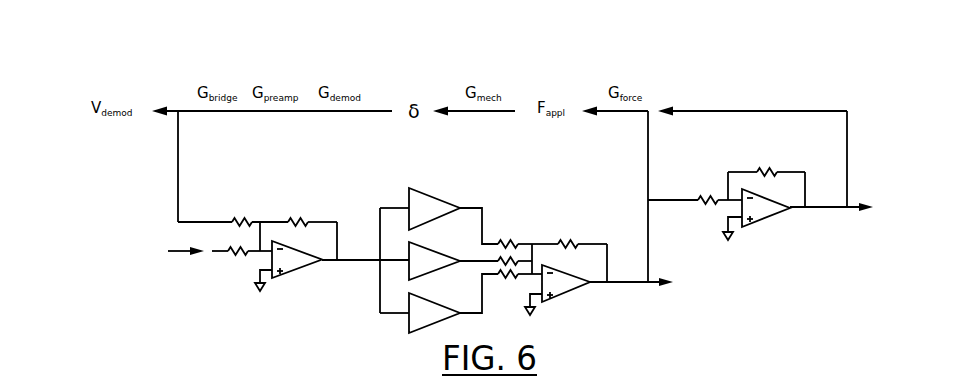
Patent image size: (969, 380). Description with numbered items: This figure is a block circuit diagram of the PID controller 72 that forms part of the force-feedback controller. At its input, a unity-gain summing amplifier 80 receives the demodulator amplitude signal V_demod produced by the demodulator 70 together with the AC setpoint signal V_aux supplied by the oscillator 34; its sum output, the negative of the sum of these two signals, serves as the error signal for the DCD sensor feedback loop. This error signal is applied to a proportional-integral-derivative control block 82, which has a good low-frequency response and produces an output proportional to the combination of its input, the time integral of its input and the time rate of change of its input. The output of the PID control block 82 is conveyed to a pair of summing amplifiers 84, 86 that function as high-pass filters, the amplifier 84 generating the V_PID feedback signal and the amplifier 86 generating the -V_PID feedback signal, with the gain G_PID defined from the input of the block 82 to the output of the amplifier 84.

The oscillator 34 is at (136, 302).
The demodulator 70 is at (97, 173).
The PID controller 72 is at (668, 60).
The summing amplifier 80 is at (296, 270).
The PID control block 82 is at (480, 182).
The summing amplifier 84 is at (570, 287).
The summing amplifier 86 is at (770, 215).